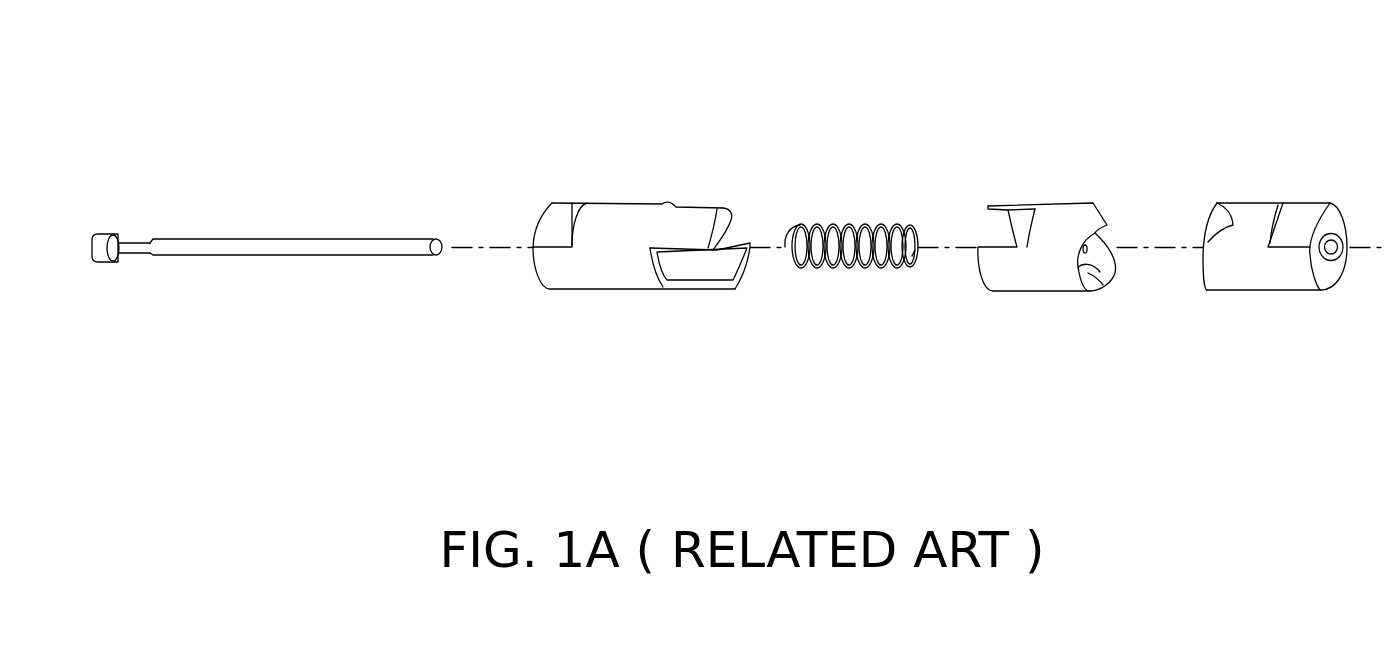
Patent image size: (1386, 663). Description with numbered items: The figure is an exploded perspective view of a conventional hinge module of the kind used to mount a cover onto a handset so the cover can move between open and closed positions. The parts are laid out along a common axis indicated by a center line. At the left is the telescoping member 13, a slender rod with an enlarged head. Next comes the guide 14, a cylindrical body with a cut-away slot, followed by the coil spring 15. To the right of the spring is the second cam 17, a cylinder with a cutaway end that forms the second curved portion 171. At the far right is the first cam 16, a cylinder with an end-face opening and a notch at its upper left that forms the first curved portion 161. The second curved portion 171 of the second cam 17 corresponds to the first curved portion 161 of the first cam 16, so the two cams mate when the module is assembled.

The telescoping member 13 is at (285, 236).
The guide 14 is at (622, 202).
The spring 15 is at (850, 216).
The second cam 17 is at (1063, 202).
The second curved portion 171 is at (1090, 275).
The first cam 16 is at (1260, 201).
The first curved portion 161 is at (1217, 222).